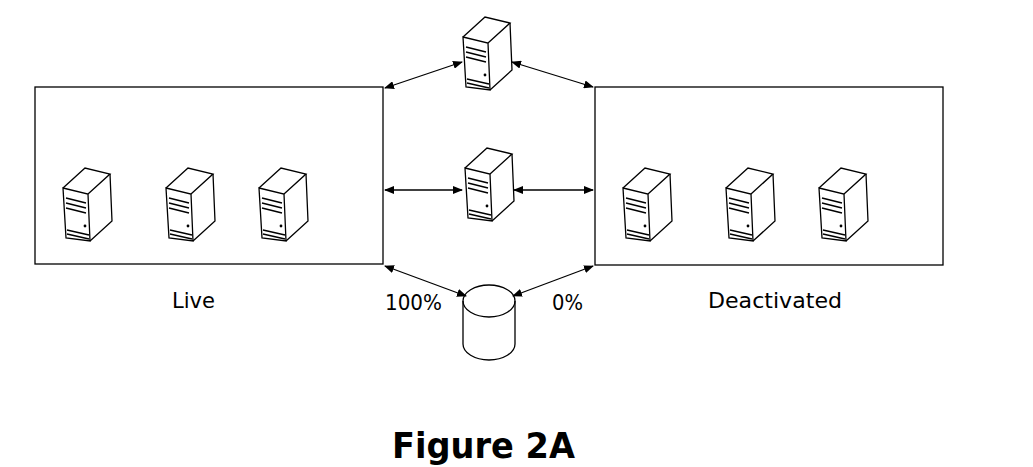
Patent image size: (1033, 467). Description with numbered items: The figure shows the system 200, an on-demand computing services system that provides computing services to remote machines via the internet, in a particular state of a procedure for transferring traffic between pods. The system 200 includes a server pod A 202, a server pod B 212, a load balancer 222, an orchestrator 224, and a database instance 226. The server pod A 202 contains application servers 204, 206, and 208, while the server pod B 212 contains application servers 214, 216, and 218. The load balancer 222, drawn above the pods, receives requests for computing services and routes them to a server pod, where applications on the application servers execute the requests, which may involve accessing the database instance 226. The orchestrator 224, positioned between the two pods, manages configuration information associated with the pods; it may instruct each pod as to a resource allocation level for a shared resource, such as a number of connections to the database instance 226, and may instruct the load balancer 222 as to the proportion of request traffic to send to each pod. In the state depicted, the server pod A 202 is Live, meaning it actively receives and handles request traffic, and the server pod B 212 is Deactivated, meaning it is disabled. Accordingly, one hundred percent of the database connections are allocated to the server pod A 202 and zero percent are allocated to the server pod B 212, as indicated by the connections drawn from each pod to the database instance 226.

The system 200 is at (762, 348).
The server pod A 202 is at (92, 87).
The application server 204 is at (85, 168).
The application server 206 is at (188, 168).
The application server 208 is at (281, 168).
The server pod B 212 is at (652, 87).
The application server 214 is at (645, 168).
The application server 216 is at (748, 168).
The application server 218 is at (841, 168).
The load balancer 222 is at (512, 50).
The orchestrator 224 is at (466, 165).
The database instance 226 is at (468, 290).